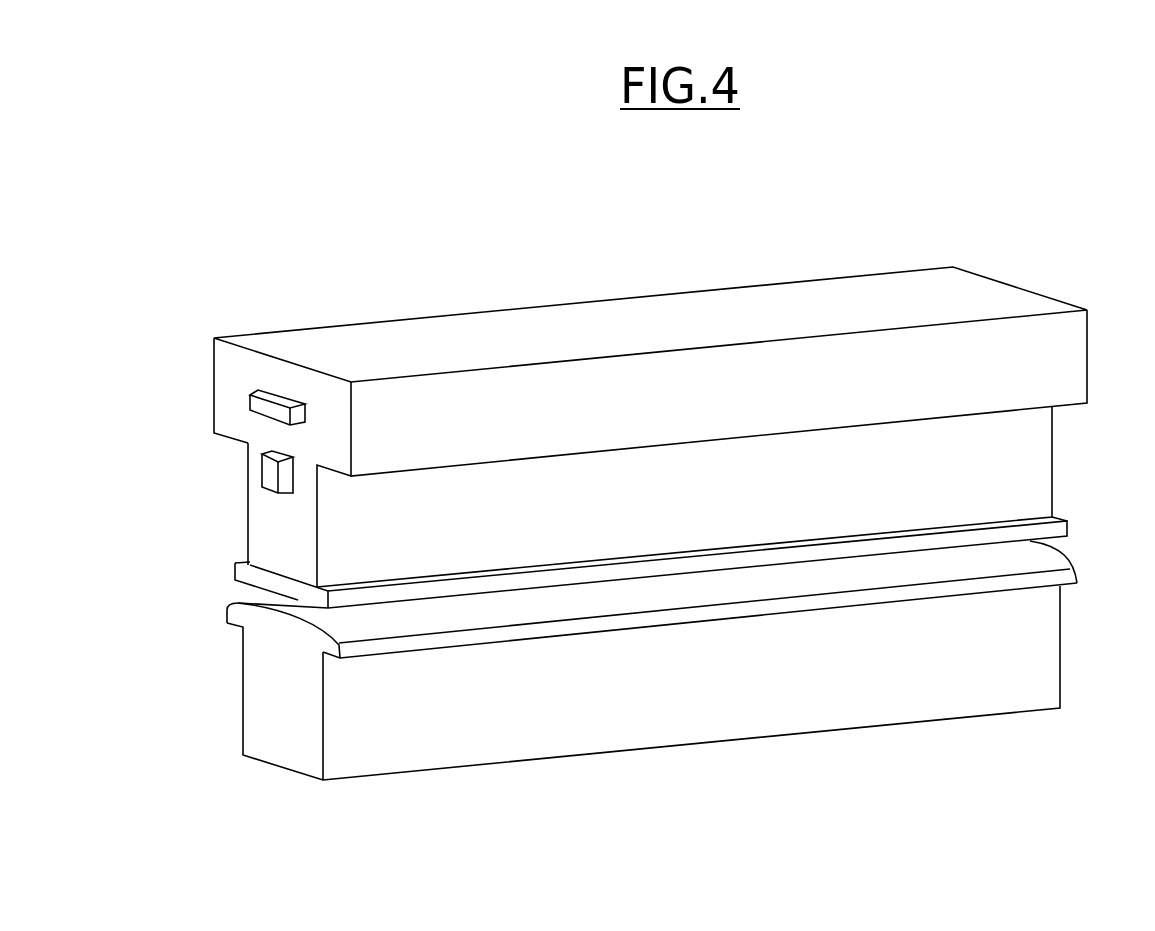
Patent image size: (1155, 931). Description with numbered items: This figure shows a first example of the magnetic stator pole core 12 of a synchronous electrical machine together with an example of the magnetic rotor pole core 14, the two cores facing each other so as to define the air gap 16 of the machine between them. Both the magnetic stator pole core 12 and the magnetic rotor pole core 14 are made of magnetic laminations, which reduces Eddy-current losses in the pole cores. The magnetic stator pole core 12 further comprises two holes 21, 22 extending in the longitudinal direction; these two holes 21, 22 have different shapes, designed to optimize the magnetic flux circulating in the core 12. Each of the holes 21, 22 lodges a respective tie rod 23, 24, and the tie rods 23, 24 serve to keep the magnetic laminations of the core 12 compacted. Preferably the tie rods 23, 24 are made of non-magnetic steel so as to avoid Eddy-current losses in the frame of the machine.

The magnetic stator pole core 12 is at (580, 303).
The magnetic rotor pole core 14 is at (690, 745).
The air gap 16 is at (222, 580).
The hole 21 is at (229, 405).
The hole 22 is at (236, 499).
The tie rod 23 is at (258, 408).
The tie rod 24 is at (268, 480).